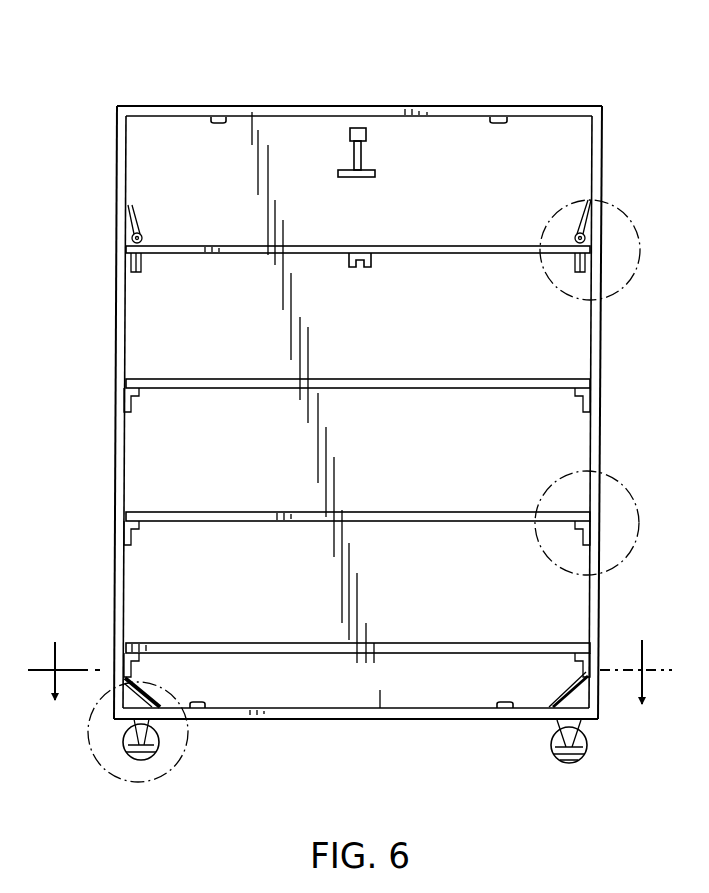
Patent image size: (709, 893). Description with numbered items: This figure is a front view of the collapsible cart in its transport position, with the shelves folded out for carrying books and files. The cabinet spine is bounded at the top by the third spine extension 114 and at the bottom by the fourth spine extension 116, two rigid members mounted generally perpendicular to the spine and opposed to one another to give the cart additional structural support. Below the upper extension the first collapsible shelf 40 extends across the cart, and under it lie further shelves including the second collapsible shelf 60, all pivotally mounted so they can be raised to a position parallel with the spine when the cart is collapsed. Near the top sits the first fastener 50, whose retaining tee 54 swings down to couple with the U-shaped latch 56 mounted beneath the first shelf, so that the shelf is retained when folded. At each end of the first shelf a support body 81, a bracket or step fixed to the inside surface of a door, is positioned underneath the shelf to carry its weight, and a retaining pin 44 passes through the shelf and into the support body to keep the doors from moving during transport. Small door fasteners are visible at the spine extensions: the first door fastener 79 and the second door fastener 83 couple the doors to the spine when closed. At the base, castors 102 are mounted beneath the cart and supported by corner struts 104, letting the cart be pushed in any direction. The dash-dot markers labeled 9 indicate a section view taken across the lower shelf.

The section line 9- 9 is at (347, 675).
The first collapsible shelf 40 is at (500, 248).
The retaining pin 44 is at (590, 250).
The first fastener 50 is at (263, 152).
The retaining tee 54 is at (349, 155).
The latch 56 is at (372, 258).
The second collapsible shelf 60 is at (186, 390).
The first door fastener 79 is at (503, 114).
The support body 81 is at (590, 268).
The second door fastener 83 is at (217, 115).
The castors 102 is at (577, 755).
The corner struts 104 is at (584, 692).
The third spine extension 114 is at (362, 112).
The fourth spine extension 116 is at (370, 720).